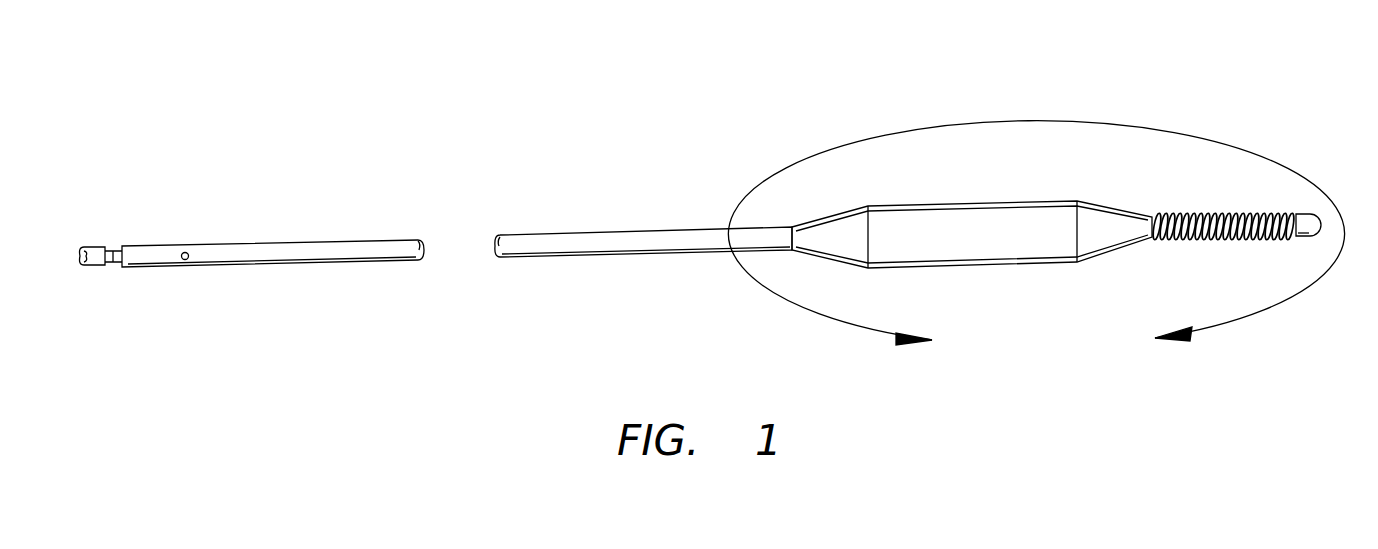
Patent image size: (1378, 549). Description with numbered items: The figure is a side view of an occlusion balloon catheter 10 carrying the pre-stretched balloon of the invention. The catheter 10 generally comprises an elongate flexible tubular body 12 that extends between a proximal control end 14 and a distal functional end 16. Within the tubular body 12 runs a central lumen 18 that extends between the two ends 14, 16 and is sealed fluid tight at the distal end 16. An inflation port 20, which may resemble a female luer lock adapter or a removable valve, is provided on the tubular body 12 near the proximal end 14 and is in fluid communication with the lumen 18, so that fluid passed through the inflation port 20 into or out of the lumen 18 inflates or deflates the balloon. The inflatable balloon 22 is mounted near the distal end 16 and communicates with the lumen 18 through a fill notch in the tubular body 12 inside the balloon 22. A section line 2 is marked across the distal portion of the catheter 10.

The occlusion balloon catheter 10 is at (488, 104).
The elongate flexible tubular body 12 is at (320, 240).
The proximal control end 14 is at (127, 228).
The distal functional end 16 is at (1313, 172).
The central lumen 18 is at (486, 267).
The inflation port 20 is at (185, 263).
The inflatable balloon 22 is at (1077, 200).
The section line 2- 2 is at (1036, 241).